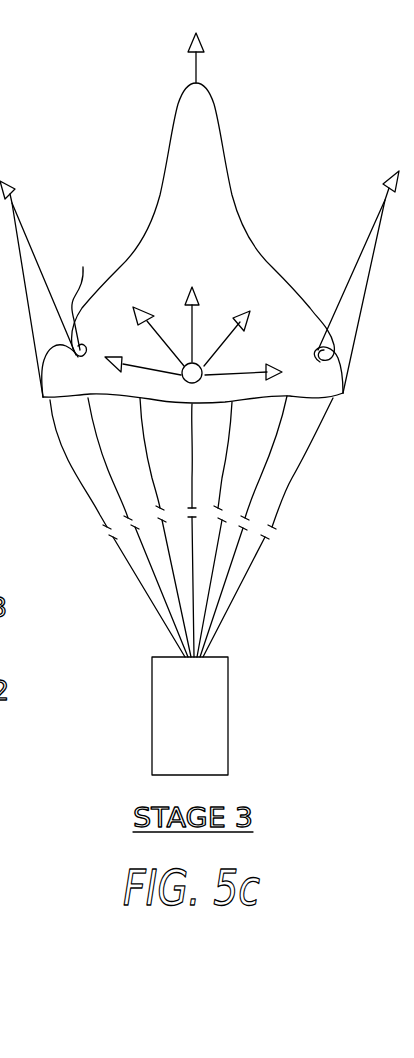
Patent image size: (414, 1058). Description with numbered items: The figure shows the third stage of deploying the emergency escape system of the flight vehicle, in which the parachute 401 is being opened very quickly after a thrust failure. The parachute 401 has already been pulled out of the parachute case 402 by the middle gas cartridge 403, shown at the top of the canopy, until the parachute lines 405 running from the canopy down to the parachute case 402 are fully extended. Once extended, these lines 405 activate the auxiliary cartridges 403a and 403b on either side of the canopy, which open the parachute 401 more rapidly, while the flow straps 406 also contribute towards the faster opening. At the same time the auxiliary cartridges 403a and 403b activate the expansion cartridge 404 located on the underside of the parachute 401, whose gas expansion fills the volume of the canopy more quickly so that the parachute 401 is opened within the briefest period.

The parachute 401 is at (182, 113).
The parachute case 402 is at (228, 702).
The gas cartridge 403 is at (188, 46).
The auxiliary cartridge 403a is at (14, 186).
The auxiliary cartridge 403b is at (388, 186).
The expansion cartridge 404 is at (207, 367).
The parachute lines 405 is at (270, 557).
The flow straps 406 is at (91, 294).